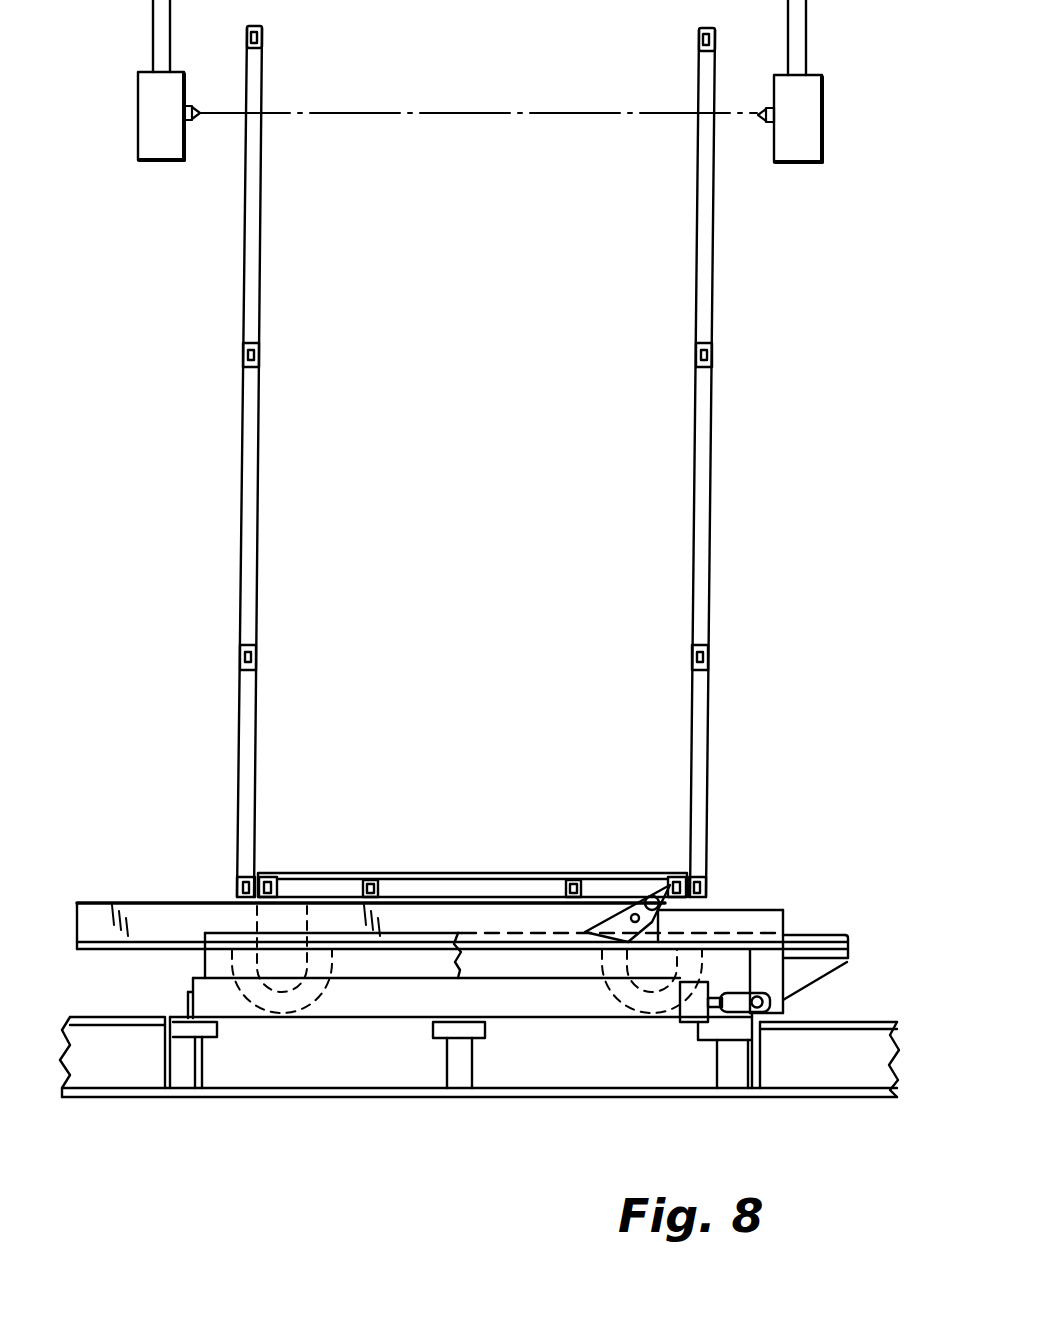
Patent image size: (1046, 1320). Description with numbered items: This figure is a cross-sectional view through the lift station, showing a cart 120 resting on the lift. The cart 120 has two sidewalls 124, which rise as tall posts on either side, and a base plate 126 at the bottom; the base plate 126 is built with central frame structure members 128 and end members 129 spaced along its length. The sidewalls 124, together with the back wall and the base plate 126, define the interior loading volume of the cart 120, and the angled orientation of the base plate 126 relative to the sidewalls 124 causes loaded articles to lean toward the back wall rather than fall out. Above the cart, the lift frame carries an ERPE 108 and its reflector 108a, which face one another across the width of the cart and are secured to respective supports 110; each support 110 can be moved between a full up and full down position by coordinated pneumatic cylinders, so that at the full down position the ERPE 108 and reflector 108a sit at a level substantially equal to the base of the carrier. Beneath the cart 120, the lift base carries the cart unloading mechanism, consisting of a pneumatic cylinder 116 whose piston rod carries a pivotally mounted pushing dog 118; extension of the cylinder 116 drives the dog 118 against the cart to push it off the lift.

The ERPE 108 is at (758, 125).
The reflector 108a is at (190, 124).
The support 110 is at (150, 116).
The pneumatic cylinder 116 is at (394, 1003).
The pushing dog 118 is at (680, 922).
The cart 120 is at (215, 447).
The sidewall 124 is at (240, 656).
The base plate 126 is at (441, 875).
The central frame structure member 128 is at (371, 880).
The end member 129 is at (268, 877).